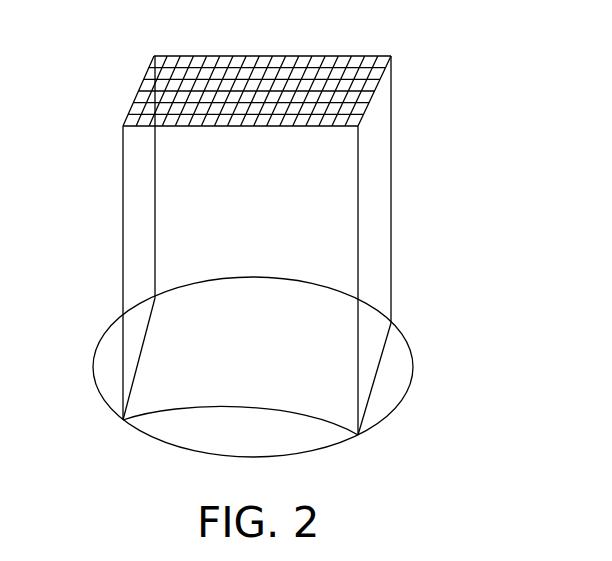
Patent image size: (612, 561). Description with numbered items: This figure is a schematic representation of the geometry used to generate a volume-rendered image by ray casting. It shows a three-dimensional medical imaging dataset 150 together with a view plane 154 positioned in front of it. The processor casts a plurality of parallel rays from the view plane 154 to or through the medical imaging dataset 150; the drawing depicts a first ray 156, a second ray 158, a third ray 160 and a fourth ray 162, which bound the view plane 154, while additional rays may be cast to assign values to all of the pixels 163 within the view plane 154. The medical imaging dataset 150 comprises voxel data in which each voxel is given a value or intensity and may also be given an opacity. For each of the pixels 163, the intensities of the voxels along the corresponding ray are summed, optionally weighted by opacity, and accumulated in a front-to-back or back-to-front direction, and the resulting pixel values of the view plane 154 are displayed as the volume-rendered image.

The 3D medical imaging dataset 150 is at (395, 377).
The view plane 154 is at (379, 83).
The first ray 156 is at (156, 192).
The second ray 158 is at (123, 237).
The third ray 160 is at (392, 187).
The fourth ray 162 is at (358, 234).
The pixels 163 is at (181, 56).